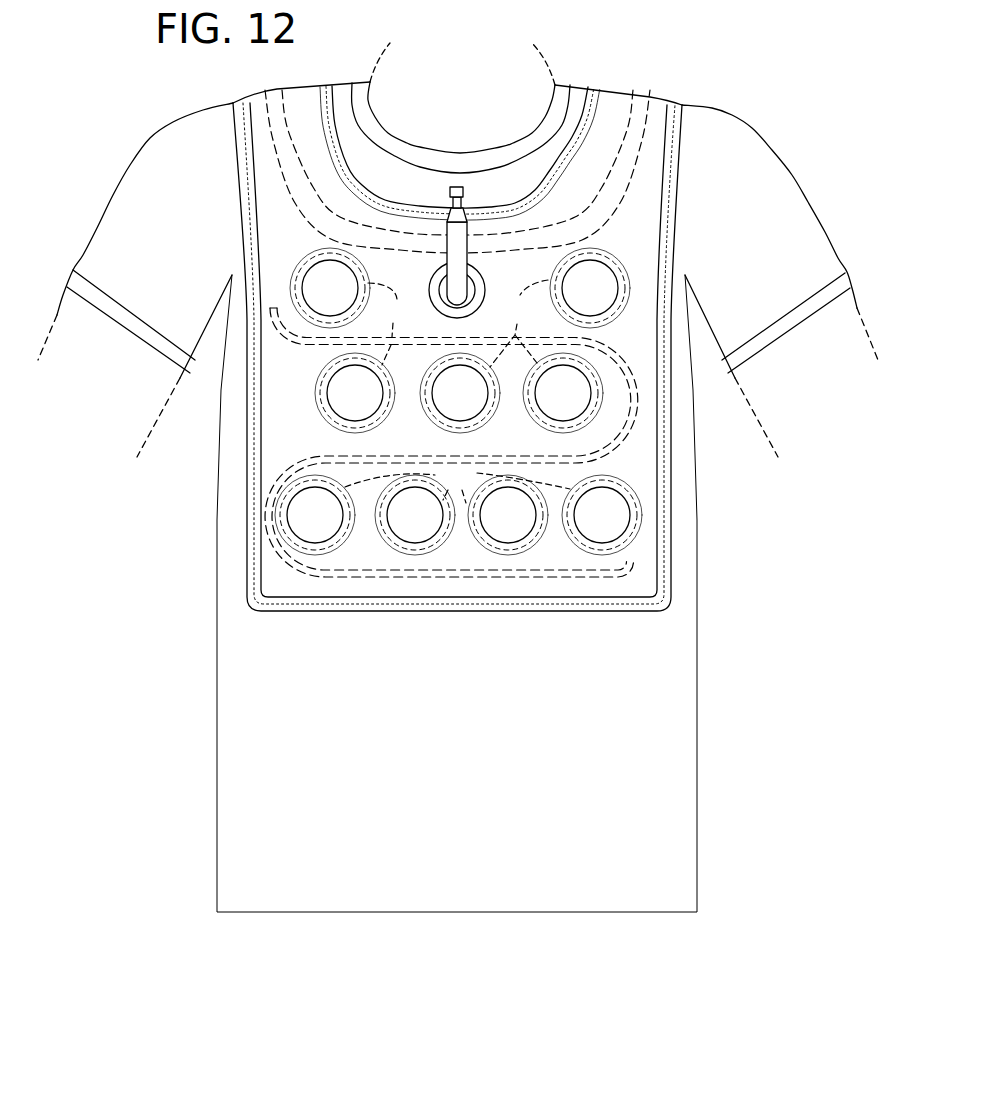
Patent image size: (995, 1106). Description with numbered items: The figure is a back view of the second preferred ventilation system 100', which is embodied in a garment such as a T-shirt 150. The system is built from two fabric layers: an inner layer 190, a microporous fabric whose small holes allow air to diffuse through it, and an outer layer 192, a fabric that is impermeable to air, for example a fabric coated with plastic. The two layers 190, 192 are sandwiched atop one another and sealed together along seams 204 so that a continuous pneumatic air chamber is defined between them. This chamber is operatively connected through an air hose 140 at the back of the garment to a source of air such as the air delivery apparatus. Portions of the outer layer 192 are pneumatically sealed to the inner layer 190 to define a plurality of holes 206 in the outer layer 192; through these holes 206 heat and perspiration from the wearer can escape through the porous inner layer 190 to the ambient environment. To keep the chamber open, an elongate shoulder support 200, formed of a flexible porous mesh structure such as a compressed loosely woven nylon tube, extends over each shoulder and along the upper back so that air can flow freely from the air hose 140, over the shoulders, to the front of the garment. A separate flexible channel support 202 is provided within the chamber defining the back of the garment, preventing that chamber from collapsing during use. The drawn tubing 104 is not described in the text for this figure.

The ventilation system 100' is at (709, 45).
The fluid conduit tubing 104 is at (457, 333).
The air hose 140 is at (460, 202).
The T-shirt 150 is at (685, 720).
The inner layer 190 is at (232, 660).
The outer layer 192 is at (424, 447).
The elongate shoulder support 200 is at (633, 170).
The flexible channel support 202 is at (435, 578).
The seams 204 is at (507, 607).
The holes 206 is at (318, 279).